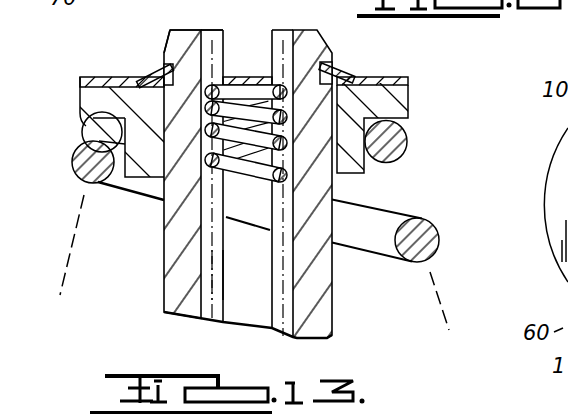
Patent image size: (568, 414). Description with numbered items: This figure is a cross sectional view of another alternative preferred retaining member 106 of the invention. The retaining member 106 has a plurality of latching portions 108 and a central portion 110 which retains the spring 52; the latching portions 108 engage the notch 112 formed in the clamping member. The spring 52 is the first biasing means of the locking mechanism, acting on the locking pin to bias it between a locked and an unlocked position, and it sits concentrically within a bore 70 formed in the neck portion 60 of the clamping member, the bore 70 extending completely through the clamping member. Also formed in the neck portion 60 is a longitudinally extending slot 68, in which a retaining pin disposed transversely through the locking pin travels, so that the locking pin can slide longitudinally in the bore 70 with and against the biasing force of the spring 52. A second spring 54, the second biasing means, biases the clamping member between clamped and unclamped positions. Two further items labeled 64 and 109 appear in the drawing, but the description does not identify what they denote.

The first spring 52 is at (248, 168).
The second spring 54 is at (417, 228).
The neck portion 60 is at (337, 320).
The member 64 is at (171, 15).
The longitudinally extending slot 68 is at (222, 281).
The bore 70 is at (203, 304).
The retaining member 106 is at (92, 54).
The latching portions 108 is at (147, 76).
The right flange ring 109 is at (386, 99).
The central portion 110 is at (238, 77).
The notch 112 is at (172, 60).